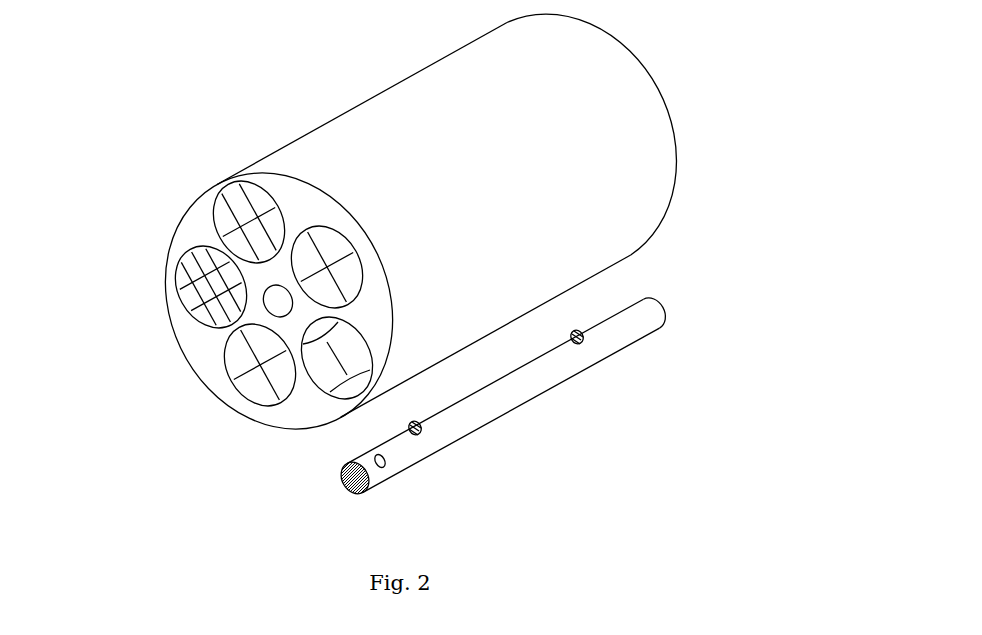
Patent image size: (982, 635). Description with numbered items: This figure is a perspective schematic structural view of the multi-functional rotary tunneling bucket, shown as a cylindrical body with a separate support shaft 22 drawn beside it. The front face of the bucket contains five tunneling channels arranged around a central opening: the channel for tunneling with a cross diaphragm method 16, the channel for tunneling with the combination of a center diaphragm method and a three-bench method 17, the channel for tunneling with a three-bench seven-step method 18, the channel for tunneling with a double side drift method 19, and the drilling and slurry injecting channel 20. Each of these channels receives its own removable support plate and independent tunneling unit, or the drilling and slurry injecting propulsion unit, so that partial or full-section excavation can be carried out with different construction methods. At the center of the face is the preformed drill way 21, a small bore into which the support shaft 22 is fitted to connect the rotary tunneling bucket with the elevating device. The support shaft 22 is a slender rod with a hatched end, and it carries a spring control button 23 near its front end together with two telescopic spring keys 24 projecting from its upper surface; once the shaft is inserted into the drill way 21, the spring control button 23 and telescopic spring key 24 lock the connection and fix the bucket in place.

The channel for tunneling with a cross diaphragm method 16 is at (332, 229).
The channel for tunneling with the combination of a center diaphragm method and a th 17 is at (258, 190).
The channel for tunneling with a three-bench seven-step method 18 is at (177, 279).
The channel for tunneling with a double side drift method 19 is at (227, 358).
The drilling and slurry injecting channel 20 is at (370, 355).
The drill way 21 is at (267, 290).
The support shaft 22 is at (342, 463).
The spring control button 23 is at (387, 463).
The telescopic spring key 24 is at (422, 433).